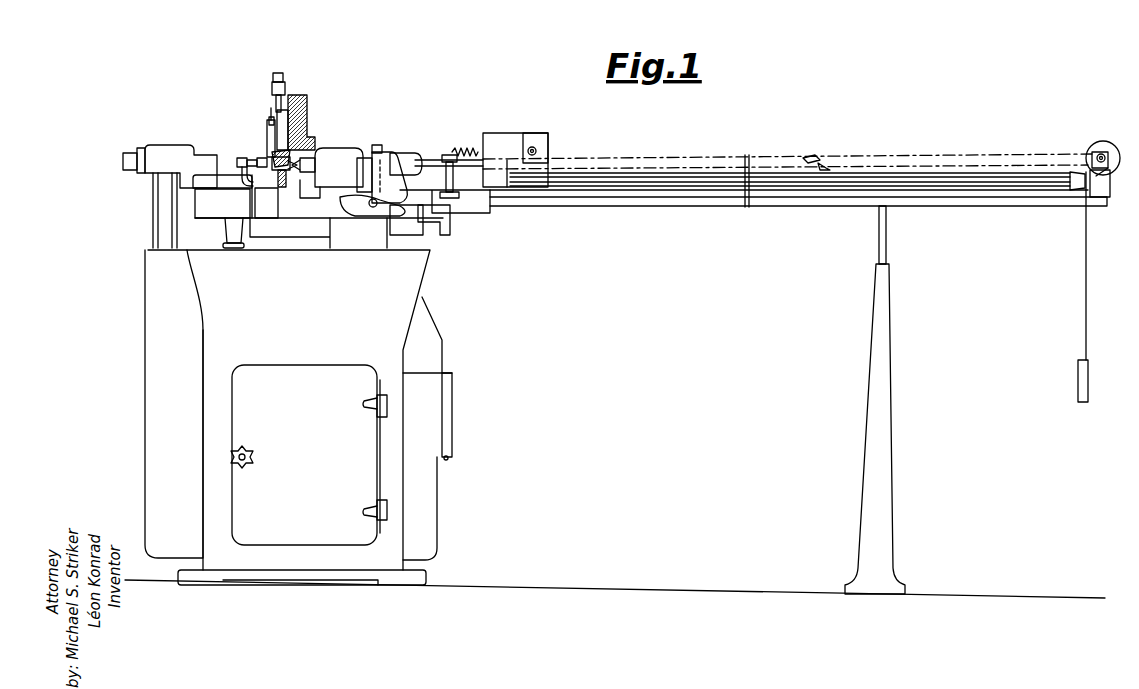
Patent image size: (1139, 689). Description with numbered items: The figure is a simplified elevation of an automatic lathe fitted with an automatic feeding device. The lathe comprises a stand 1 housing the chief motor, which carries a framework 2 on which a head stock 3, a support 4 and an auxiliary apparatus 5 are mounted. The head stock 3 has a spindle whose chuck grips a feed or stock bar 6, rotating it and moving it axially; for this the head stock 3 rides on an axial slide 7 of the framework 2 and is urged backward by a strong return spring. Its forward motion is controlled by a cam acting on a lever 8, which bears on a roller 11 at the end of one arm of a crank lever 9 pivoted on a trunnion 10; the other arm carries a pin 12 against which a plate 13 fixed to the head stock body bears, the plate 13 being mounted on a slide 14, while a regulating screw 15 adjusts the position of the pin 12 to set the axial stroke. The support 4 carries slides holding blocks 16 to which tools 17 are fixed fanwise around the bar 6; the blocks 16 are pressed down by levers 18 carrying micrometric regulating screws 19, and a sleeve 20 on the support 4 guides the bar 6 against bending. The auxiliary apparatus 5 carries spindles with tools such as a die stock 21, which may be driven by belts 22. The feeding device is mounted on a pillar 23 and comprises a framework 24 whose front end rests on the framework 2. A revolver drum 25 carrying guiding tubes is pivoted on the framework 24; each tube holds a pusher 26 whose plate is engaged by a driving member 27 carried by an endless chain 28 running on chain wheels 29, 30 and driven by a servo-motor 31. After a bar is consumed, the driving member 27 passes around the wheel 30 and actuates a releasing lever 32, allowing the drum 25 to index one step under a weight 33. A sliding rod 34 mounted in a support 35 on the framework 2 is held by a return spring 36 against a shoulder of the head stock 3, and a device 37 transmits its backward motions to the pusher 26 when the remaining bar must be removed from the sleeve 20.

The stand 1 is at (398, 295).
The framework 2 is at (212, 218).
The head stock 3 is at (338, 149).
The support 4 is at (306, 116).
The auxiliary apparatus 5 is at (170, 146).
The feed or stock bar 6 is at (441, 168).
The axial slide 7 is at (428, 172).
The lever 8 is at (400, 222).
The crank lever 9 is at (385, 150).
The trunnion 10 is at (371, 206).
The roller 11 is at (424, 190).
The pin 12 is at (410, 150).
The plate 13 is at (362, 158).
The slide 14 is at (352, 186).
The regulating screw 15 is at (377, 144).
The blocks 16 is at (268, 130).
The tools 17 is at (271, 116).
The levers 18 is at (288, 92).
The micrometric regulating screws 19 is at (279, 71).
The sleeve 20 is at (275, 175).
The die stock 21 is at (255, 157).
The belts 22 is at (175, 210).
The pillar 23 is at (886, 380).
The framework 24 is at (816, 200).
The revolver drum 25 is at (952, 175).
The pusher 26 is at (826, 166).
The driving member 27 is at (818, 157).
The endless chain 28 is at (993, 157).
The chain wheel 29 is at (535, 147).
The chain wheel 30 is at (1100, 151).
The servo-motor 31 is at (1090, 150).
The releasing lever 32 is at (1106, 186).
The weight 33 is at (1084, 388).
The sliding rod 34 is at (517, 154).
The support 35 is at (452, 170).
The return spring 36 is at (470, 148).
The device 37 is at (546, 138).